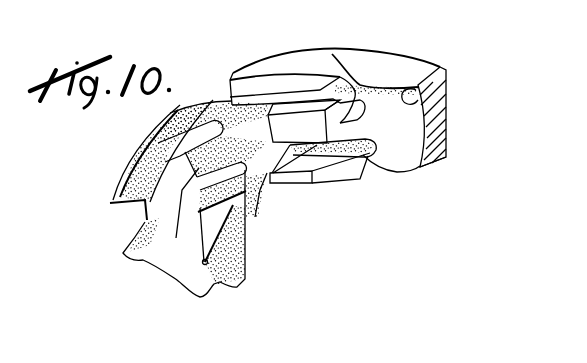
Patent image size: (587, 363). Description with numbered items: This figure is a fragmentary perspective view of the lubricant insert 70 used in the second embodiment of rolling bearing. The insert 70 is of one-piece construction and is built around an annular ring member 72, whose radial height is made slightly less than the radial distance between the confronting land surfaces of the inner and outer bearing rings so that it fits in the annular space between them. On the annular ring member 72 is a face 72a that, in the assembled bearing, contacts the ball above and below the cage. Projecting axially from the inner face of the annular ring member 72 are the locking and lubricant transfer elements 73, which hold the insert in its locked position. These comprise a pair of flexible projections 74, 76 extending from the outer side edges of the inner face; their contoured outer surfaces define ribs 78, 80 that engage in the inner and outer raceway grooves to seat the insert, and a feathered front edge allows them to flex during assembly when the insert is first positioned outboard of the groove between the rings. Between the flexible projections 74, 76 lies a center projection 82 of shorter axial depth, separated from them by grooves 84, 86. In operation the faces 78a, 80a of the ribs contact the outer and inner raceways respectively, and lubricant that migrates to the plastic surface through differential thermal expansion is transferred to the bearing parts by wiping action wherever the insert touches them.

The lubricant insert 70 is at (440, 61).
The annular ring member 72 is at (439, 160).
The face 72a is at (422, 103).
The locking and lubricant transfer elements 73 is at (344, 181).
The flexible projection 74 is at (278, 78).
The flexible projection 76 is at (320, 181).
The rib 78 is at (247, 78).
The face 78a is at (188, 103).
The rib 80 is at (245, 222).
The face 80a is at (366, 158).
The center projection 82 is at (355, 97).
The groove 84 is at (340, 77).
The groove 86 is at (370, 162).